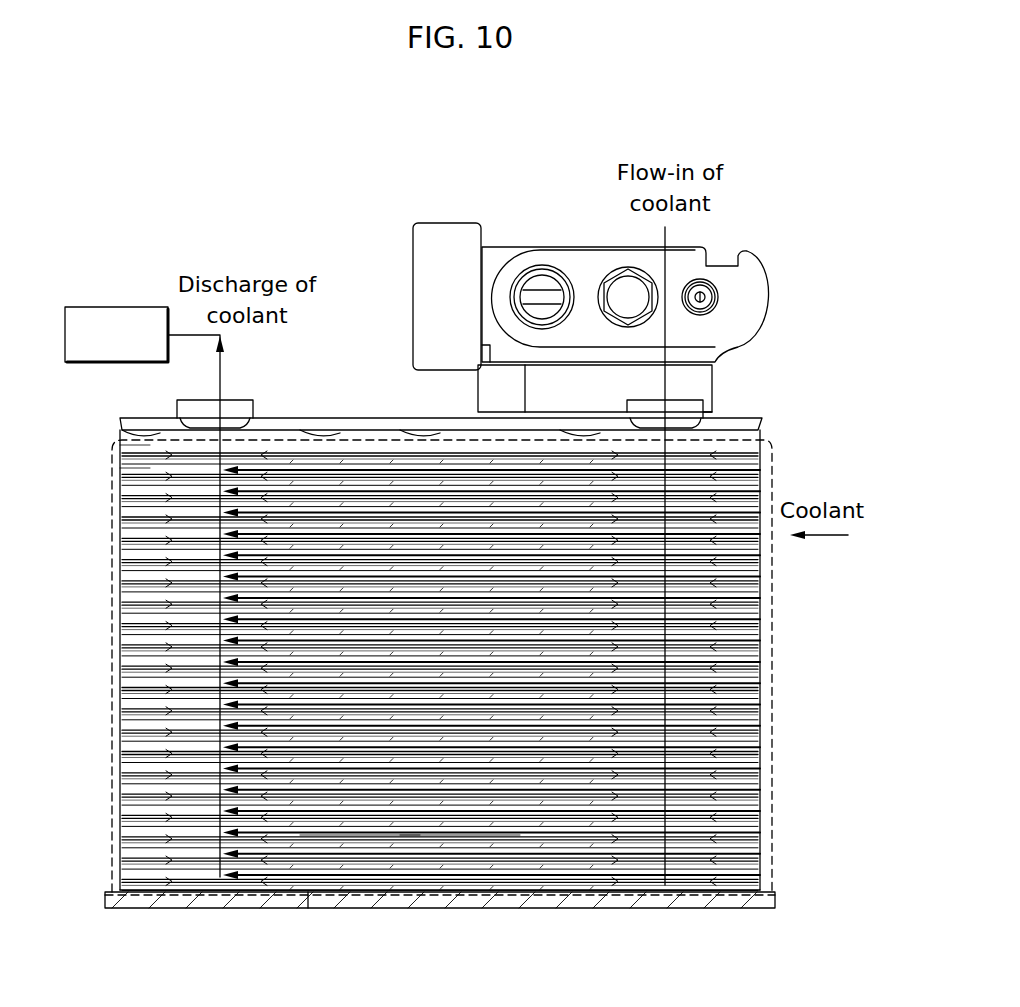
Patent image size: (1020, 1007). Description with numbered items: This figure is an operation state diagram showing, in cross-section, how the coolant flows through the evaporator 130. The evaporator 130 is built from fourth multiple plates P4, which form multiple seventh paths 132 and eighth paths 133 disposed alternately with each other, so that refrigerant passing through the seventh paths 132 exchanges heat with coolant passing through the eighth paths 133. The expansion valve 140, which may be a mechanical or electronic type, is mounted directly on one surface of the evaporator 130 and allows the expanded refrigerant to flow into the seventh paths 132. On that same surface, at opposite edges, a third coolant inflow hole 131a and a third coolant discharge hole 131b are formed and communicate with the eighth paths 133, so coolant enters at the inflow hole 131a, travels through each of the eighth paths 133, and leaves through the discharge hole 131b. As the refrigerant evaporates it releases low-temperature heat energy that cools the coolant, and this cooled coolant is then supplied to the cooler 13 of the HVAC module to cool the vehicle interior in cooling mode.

The cooler 13 is at (118, 306).
The evaporator 130 is at (775, 652).
The third coolant inflow hole 131a is at (681, 410).
The third coolant discharge hole 131b is at (239, 400).
The seventh paths 132 is at (340, 800).
The eighth paths 133 is at (443, 797).
The expansion valve 140 is at (560, 246).
The fourth plates P4 is at (138, 468).